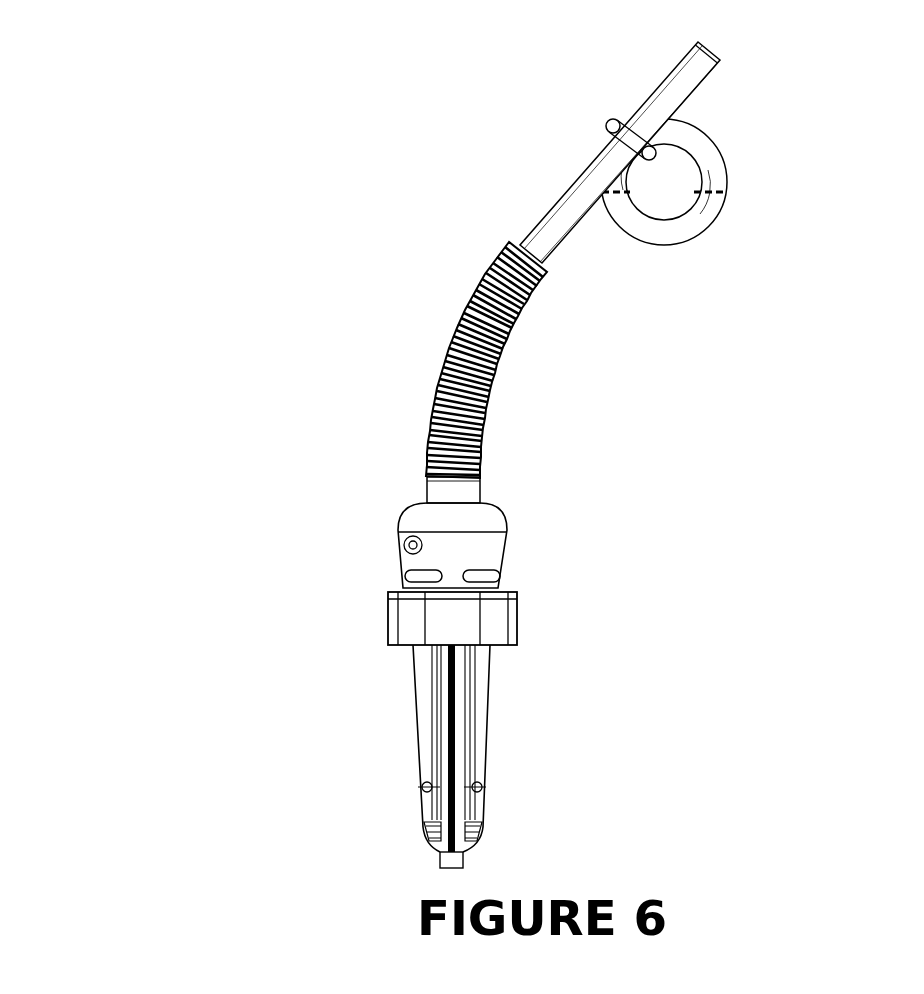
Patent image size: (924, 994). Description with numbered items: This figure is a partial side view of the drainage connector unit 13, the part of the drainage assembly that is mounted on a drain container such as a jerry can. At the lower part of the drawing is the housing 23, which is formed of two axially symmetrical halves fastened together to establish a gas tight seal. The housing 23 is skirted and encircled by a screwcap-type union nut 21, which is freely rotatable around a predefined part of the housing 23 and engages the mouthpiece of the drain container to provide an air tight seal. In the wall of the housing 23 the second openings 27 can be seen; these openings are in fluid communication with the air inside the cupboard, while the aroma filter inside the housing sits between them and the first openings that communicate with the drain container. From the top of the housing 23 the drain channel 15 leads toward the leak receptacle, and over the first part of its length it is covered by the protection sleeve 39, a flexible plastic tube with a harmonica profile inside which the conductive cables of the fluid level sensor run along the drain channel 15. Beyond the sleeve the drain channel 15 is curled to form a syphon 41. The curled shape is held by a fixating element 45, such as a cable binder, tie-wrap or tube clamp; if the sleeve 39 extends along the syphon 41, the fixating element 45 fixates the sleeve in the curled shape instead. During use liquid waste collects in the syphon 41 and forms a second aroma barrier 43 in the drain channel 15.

The drainage connector unit 13 is at (255, 326).
The drain channel 15 is at (702, 73).
The union nut 21 is at (388, 623).
The housing 23 is at (507, 530).
The second openings 27 is at (500, 577).
The protection sleeve 39 is at (540, 283).
The syphon 41 is at (725, 165).
The second aroma barrier 43 is at (702, 218).
The fixating element 45 is at (606, 126).